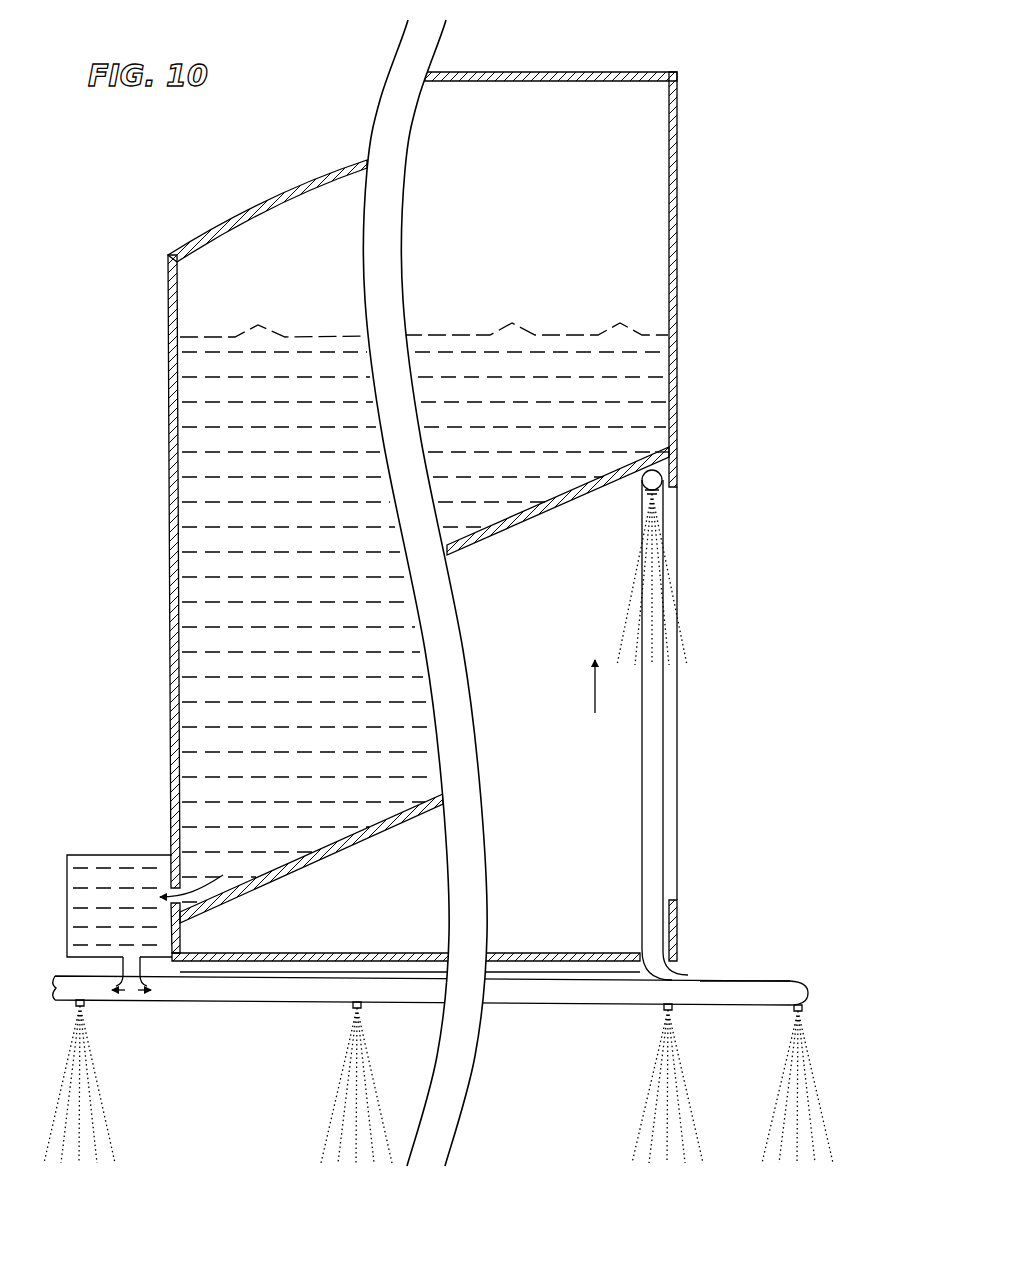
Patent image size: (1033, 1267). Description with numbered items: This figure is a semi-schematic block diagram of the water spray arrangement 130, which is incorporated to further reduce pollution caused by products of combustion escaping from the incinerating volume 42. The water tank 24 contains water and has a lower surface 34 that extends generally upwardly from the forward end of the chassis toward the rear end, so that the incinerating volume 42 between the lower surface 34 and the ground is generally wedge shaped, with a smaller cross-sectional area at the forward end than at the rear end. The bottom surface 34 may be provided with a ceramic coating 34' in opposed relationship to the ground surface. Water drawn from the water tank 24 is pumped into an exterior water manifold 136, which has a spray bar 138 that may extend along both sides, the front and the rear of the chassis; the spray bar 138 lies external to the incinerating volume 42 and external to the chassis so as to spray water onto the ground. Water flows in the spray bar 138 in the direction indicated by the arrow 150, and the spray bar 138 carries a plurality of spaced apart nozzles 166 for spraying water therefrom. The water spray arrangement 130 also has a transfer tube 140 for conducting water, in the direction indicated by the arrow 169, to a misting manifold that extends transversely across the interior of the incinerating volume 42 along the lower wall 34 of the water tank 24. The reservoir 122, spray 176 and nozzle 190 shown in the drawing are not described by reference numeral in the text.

The water tank 24 is at (598, 72).
The lower surface of the water tank 34 is at (588, 451).
The ceramic coating 34' is at (724, 441).
The incinerating volume 42 is at (548, 741).
The reservoir 122 is at (95, 855).
The water spray arrangement 130 is at (245, 182).
The exterior water manifold 136 is at (545, 1005).
The spray bar 138 is at (755, 1007).
The transfer tube 140 is at (664, 735).
The arrow indicating water flow in the spray bar 150 is at (127, 1000).
The nozzles 166 is at (662, 1008).
The arrow indicating water flow in the transfer tube 169 is at (593, 690).
The spray 176 is at (618, 612).
The nozzle 190 is at (641, 482).